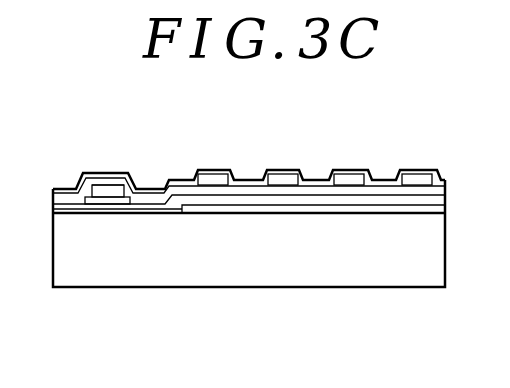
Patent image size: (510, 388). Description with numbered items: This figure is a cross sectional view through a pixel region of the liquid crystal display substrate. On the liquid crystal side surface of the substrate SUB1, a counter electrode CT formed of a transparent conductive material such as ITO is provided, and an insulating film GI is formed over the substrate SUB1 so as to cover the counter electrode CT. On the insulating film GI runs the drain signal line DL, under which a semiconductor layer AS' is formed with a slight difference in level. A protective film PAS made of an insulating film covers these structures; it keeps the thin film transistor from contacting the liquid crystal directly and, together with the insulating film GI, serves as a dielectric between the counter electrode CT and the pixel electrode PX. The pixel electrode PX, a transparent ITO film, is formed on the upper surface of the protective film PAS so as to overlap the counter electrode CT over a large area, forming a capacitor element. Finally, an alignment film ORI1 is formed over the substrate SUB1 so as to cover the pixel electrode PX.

The substrate SUB1 is at (87, 273).
The counter electrode CT is at (302, 208).
The insulating film GI is at (147, 212).
The protective film PAS is at (181, 187).
The alignment film ORI1 is at (425, 177).
The pixel electrode PX is at (283, 172).
The semiconductor layer AS' is at (90, 161).
The drain signal line DL is at (118, 196).